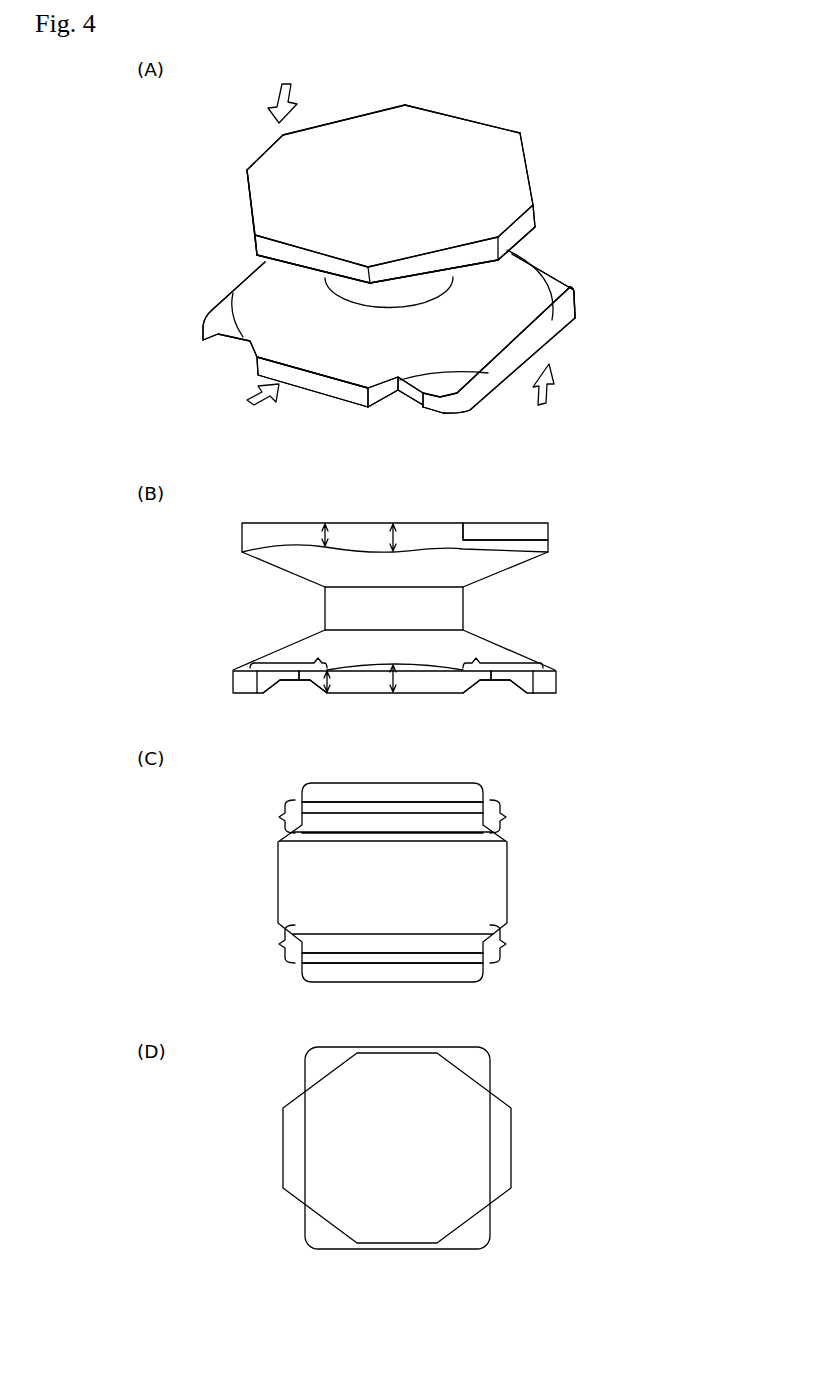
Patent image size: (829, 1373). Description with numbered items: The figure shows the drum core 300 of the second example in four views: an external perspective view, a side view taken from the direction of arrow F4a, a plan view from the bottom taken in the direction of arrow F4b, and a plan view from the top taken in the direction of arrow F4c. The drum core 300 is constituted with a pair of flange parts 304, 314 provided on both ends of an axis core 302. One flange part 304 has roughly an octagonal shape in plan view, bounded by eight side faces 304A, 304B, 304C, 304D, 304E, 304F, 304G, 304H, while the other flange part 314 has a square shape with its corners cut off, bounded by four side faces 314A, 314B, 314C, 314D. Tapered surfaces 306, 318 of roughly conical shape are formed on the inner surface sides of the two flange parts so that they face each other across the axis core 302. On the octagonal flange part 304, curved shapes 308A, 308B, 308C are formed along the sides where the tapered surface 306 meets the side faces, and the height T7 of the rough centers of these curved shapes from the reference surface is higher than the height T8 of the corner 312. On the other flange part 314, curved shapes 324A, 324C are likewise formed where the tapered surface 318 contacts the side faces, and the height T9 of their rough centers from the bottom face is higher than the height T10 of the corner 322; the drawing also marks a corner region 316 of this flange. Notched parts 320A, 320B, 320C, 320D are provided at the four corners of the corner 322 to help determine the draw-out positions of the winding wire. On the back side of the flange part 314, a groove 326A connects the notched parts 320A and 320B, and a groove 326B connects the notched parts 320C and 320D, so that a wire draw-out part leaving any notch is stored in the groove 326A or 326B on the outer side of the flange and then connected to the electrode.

The drum core 300 is at (712, 135).
The axis core 302 is at (415, 298).
The flange part 304 is at (535, 126).
The side face 304A is at (290, 253).
The side face 304B is at (482, 253).
The side face 304C is at (532, 215).
The side face 304D is at (528, 152).
The side face 304E is at (490, 108).
The side face 304F is at (341, 121).
The side face 304G is at (262, 153).
The side face 304H is at (247, 217).
The tapered surface 306 is at (498, 573).
The curved shape 308A is at (287, 272).
The curved shape 308B is at (467, 272).
The curved shape 308C is at (520, 245).
The corner 312 is at (255, 242).
The flange part 314 is at (572, 358).
The side face 314A is at (357, 395).
The side face 314B is at (560, 292).
The side face 314C is at (552, 330).
The side face 314D is at (213, 302).
The corner portion 316 is at (580, 293).
The tapered surface 318 is at (495, 393).
The notched part 320A is at (442, 380).
The notched part 320B is at (258, 944).
The notched part 320C is at (222, 328).
The notched part 320D is at (258, 816).
The corner 322 is at (202, 328).
The curved shape 324A is at (323, 368).
The curved shape 324C is at (487, 378).
The groove 326A is at (495, 688).
The groove 326B is at (297, 690).
The height of curved shapes T7 is at (400, 530).
The height of corner T8 is at (331, 530).
The height of curved shapes T9 is at (398, 680).
The height of corner T10 is at (333, 686).
The arrow F4a is at (249, 404).
The arrow F4b is at (556, 393).
The arrow F4c is at (278, 93).